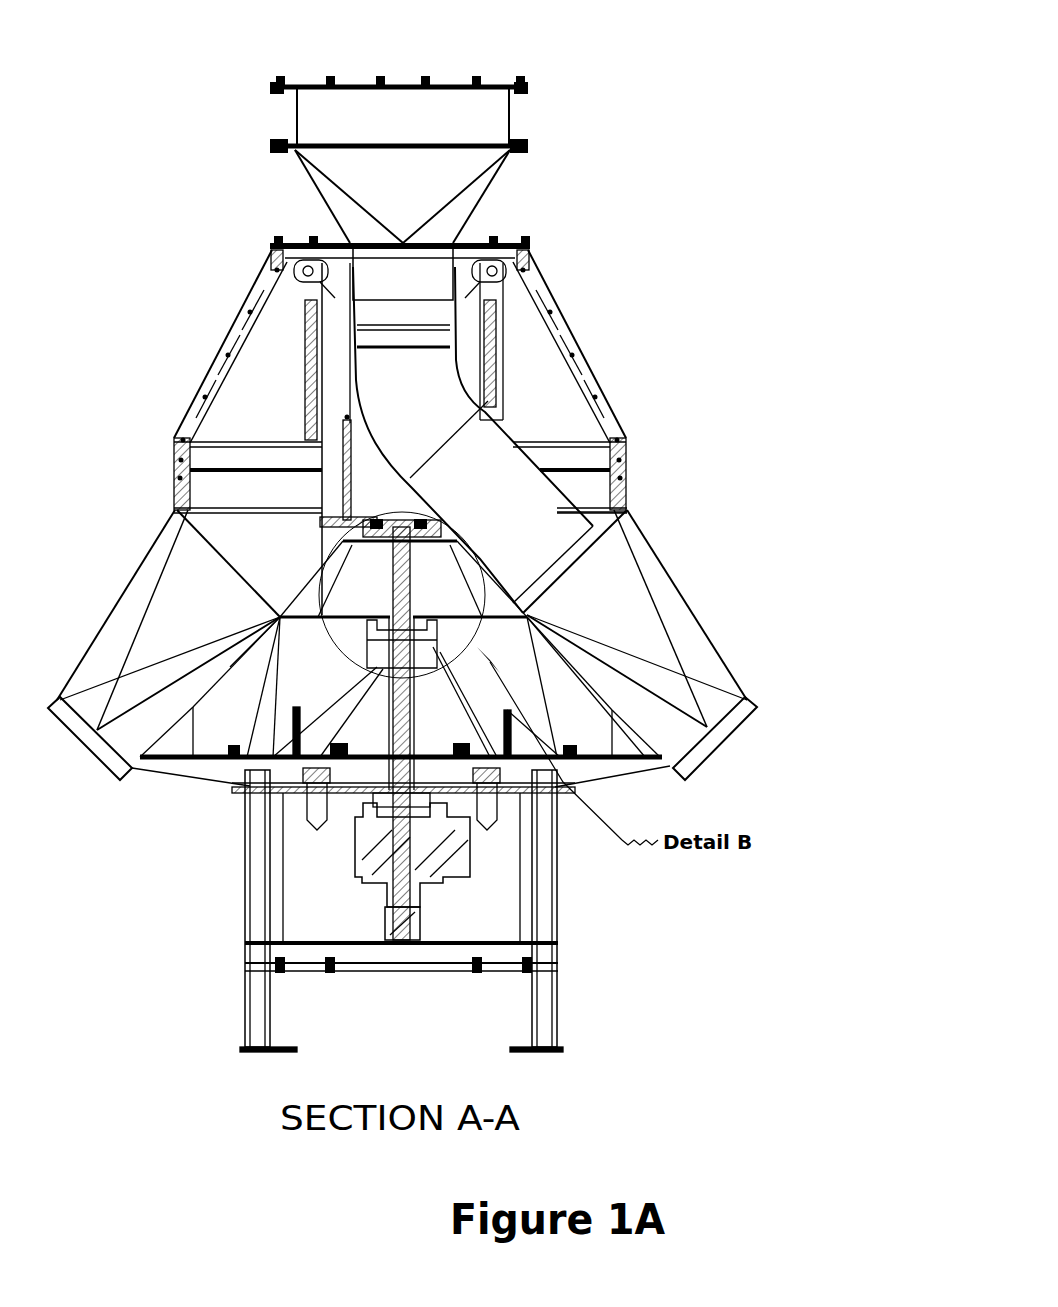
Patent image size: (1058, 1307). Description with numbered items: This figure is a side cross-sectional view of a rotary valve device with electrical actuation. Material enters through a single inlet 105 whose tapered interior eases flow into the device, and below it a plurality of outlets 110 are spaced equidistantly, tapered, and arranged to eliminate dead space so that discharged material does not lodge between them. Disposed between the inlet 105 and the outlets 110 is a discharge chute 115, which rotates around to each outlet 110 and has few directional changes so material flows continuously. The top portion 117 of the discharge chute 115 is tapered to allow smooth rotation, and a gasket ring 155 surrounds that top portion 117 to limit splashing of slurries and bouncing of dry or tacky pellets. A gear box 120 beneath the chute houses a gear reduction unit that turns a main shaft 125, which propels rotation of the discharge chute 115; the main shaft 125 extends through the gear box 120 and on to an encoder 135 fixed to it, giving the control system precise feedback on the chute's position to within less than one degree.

The inlet 105 is at (450, 107).
The gasket ring 155 is at (485, 243).
The top portion 117 is at (433, 307).
The discharge chute 115 is at (627, 512).
The outlets 110 is at (720, 700).
The main shaft 125 is at (403, 793).
The gear box 120 is at (417, 853).
The encoder 135 is at (438, 950).